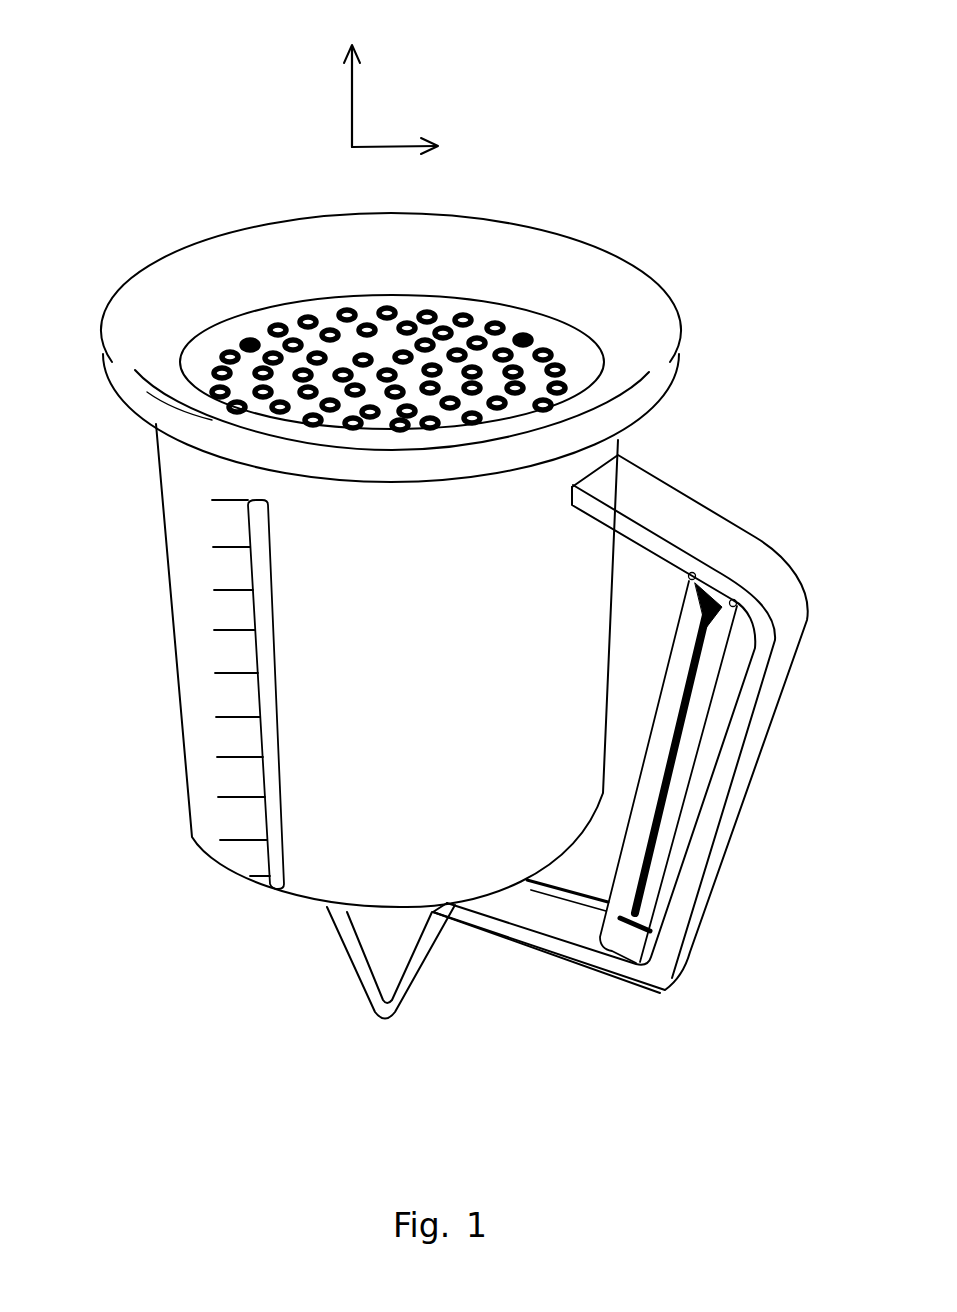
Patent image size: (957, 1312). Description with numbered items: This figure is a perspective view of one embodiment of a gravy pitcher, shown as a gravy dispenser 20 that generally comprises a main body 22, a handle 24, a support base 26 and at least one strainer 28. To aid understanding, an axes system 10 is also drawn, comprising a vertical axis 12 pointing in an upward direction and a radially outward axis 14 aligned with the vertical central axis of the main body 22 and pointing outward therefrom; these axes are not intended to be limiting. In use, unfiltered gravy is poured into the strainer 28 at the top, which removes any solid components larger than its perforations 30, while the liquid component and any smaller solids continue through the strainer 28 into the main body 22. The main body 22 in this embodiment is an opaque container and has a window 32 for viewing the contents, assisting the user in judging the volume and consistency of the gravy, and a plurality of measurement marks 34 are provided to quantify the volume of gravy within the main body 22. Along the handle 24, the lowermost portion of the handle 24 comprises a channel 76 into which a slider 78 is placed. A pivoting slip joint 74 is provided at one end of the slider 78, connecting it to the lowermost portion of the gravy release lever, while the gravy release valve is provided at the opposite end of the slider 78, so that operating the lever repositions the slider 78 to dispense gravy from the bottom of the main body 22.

The axes system 10 is at (420, 88).
The vertical axis 12 is at (352, 92).
The radially outward axis 14 is at (393, 141).
The gravy dispenser 20 is at (461, 612).
The main body 22 is at (163, 547).
The handle 24 is at (780, 702).
The support base 26 is at (360, 990).
The strainer 28 is at (600, 252).
The perforations 30 is at (279, 320).
The window 32 is at (257, 818).
The measurement marks 34 is at (217, 630).
The pivoting slip joint 74 is at (667, 935).
The channel 76 is at (626, 988).
The slider 78 is at (562, 932).